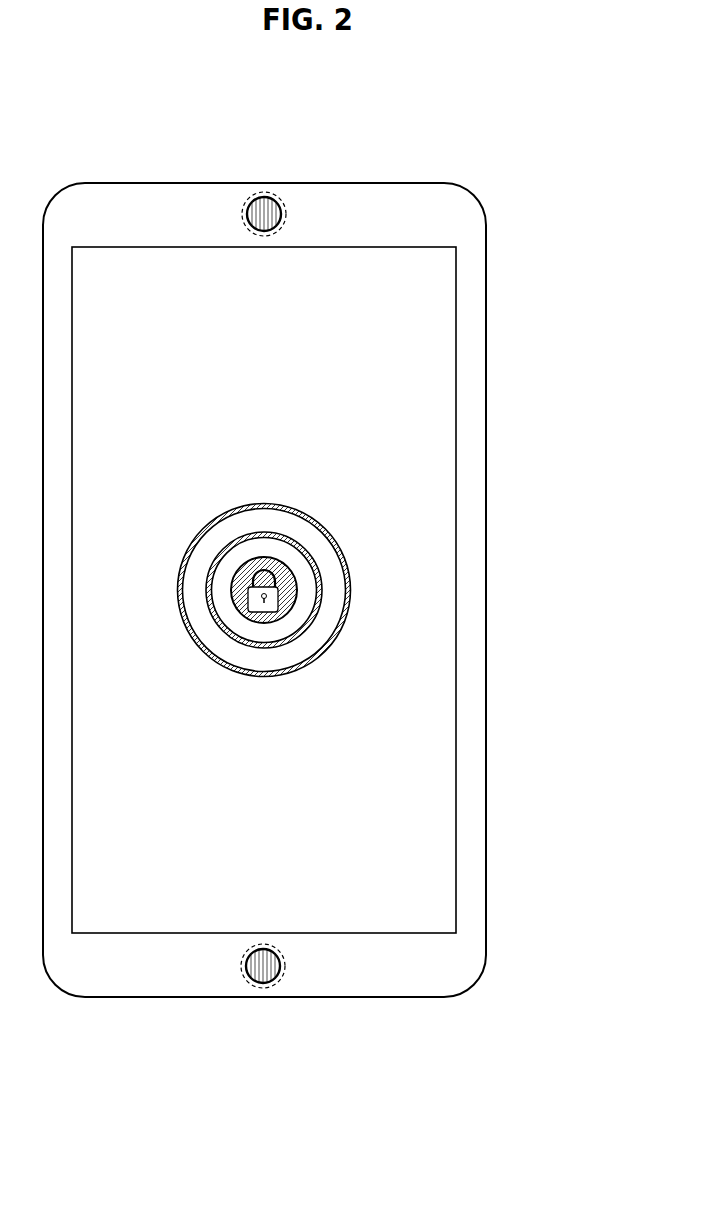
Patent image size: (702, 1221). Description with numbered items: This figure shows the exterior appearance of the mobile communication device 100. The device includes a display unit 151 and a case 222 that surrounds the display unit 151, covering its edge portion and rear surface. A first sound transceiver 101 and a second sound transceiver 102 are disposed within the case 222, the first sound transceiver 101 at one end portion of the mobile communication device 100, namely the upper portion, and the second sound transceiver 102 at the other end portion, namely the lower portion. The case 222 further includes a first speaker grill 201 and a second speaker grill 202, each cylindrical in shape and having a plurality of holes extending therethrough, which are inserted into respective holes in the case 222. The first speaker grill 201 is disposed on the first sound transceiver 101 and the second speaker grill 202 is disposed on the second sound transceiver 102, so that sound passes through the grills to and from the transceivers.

The mobile communication device 100 is at (324, 587).
The case 222 is at (470, 630).
The display unit 151 is at (405, 525).
The first speaker grill 201 is at (262, 207).
The first sound transceiver 101 is at (274, 198).
The second speaker grill 202 is at (263, 970).
The second sound transceiver 102 is at (270, 985).